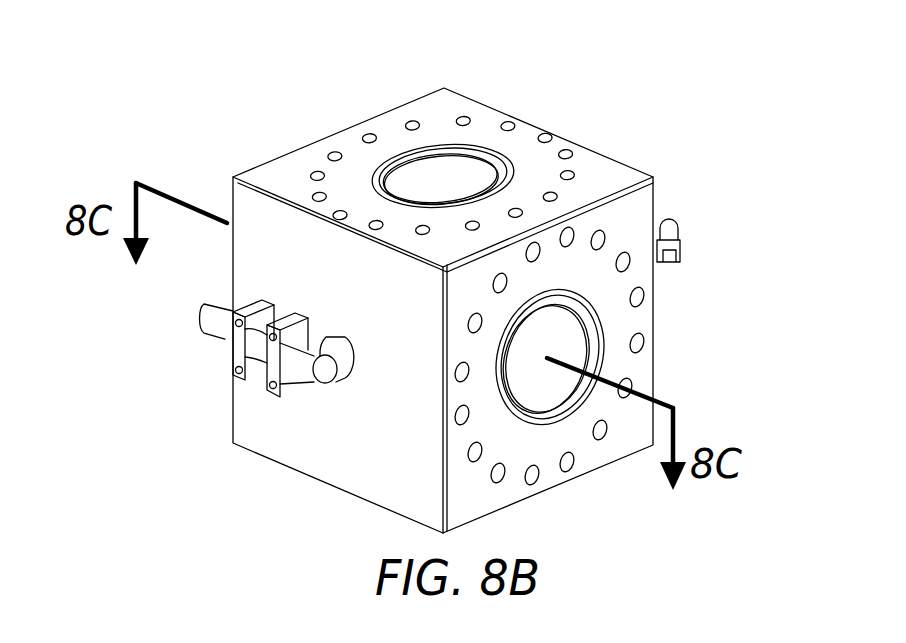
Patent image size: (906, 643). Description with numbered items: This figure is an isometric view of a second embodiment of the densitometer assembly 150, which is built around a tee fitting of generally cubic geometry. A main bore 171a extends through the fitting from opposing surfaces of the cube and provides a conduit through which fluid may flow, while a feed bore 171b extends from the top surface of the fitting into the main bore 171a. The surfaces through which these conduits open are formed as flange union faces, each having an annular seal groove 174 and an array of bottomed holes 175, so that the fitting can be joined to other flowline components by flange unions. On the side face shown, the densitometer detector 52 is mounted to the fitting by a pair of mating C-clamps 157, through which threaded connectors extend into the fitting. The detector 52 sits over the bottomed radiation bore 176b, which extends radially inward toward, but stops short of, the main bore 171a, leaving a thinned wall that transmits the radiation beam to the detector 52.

The densitometer assembly 150 is at (214, 94).
The feed bore 171b is at (468, 173).
The bottomed holes 175 is at (570, 160).
The annular seal groove 174 is at (592, 315).
The main bore 171a is at (560, 338).
The C-clamps 157 is at (242, 354).
The densitometer detector 52 is at (285, 400).
The radiation bore 176b is at (333, 380).